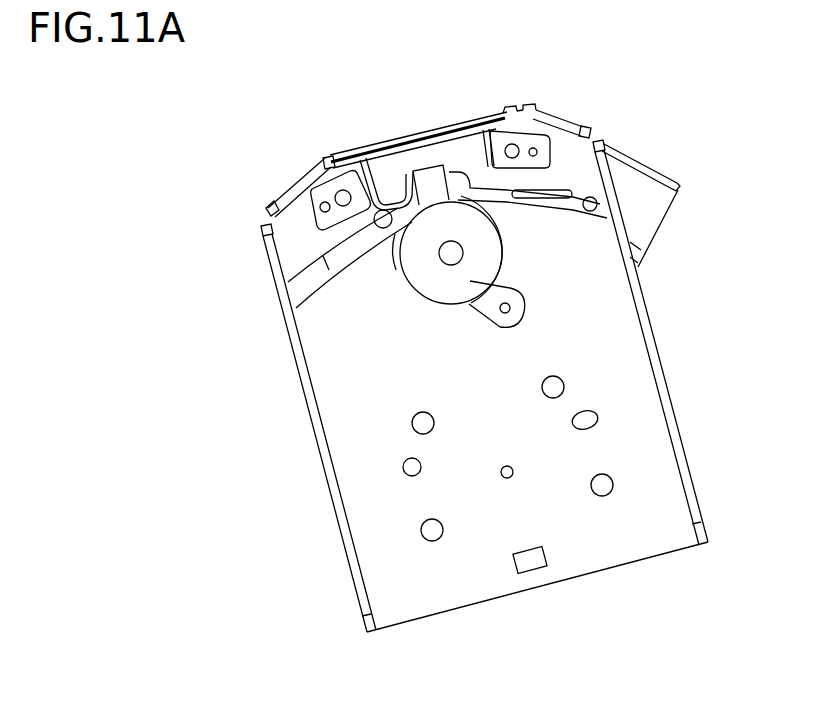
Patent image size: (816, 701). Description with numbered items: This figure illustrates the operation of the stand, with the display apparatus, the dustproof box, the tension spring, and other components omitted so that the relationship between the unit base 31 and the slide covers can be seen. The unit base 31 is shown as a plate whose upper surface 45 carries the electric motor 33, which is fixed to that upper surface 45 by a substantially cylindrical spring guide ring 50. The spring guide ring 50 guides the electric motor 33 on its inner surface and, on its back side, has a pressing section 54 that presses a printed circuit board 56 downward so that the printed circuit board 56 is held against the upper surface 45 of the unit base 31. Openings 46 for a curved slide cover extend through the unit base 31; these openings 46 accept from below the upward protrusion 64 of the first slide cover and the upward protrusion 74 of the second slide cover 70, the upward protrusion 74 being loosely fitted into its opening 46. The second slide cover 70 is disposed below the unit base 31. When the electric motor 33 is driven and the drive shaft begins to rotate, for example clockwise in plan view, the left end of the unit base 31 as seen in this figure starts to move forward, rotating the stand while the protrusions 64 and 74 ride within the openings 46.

The unit base 31 is at (320, 511).
The electric motor 33 is at (420, 298).
The upper surface 45 is at (650, 458).
The openings for a curved slide cover 46 is at (490, 197).
The spring guide ring 50 is at (508, 262).
The pressing section 54 is at (381, 170).
The printed circuit board 56 is at (495, 136).
The upward protrusion 64 is at (378, 213).
The second slide cover 70 is at (652, 162).
The upward protrusion 74 is at (597, 204).